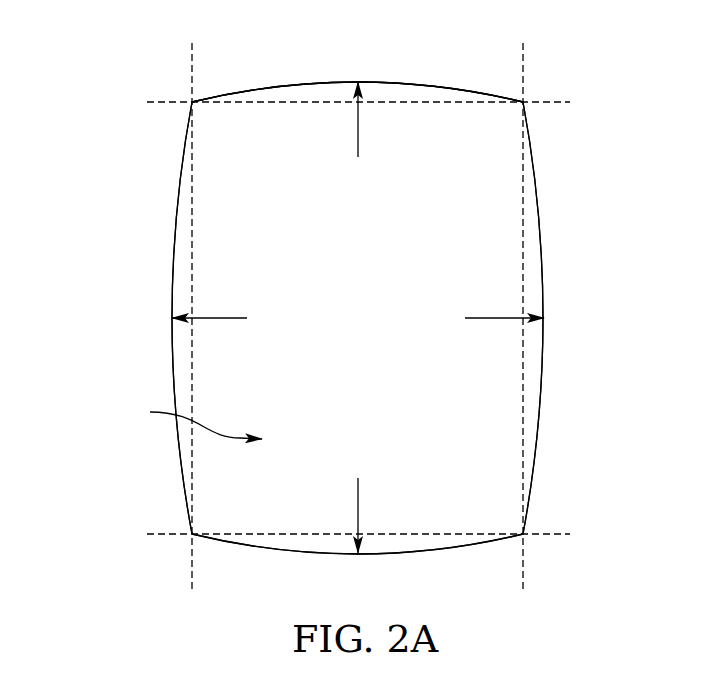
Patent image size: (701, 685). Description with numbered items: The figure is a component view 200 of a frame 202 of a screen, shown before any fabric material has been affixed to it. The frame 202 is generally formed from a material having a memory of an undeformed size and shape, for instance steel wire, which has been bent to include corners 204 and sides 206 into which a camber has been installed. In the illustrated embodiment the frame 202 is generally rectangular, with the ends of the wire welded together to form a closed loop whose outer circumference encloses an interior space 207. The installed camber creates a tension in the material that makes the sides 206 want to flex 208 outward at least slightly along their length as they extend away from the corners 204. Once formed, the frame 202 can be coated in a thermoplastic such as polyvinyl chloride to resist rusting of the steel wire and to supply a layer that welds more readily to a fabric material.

The component view 200 is at (97, 52).
The frame 202 is at (245, 90).
The corners 204 is at (192, 102).
The sides 206 is at (315, 82).
The interior space 207 is at (187, 420).
The flex 208 is at (357, 130).